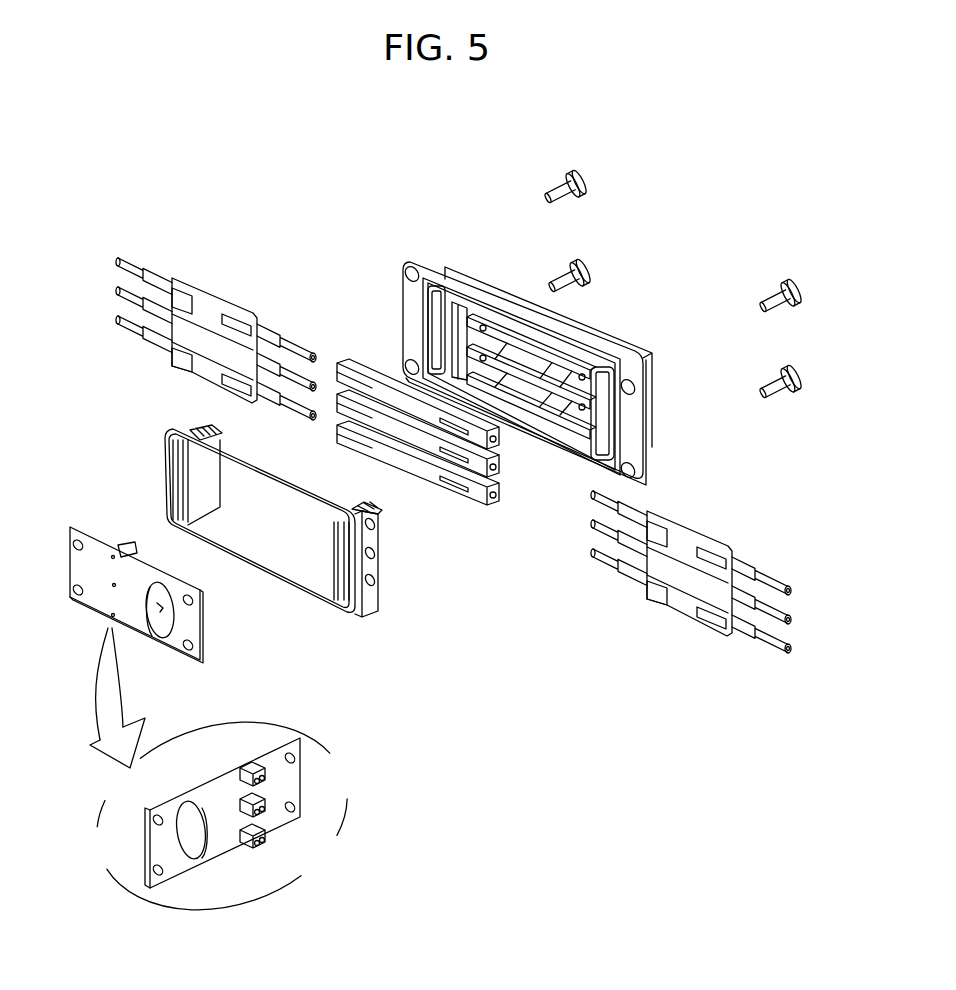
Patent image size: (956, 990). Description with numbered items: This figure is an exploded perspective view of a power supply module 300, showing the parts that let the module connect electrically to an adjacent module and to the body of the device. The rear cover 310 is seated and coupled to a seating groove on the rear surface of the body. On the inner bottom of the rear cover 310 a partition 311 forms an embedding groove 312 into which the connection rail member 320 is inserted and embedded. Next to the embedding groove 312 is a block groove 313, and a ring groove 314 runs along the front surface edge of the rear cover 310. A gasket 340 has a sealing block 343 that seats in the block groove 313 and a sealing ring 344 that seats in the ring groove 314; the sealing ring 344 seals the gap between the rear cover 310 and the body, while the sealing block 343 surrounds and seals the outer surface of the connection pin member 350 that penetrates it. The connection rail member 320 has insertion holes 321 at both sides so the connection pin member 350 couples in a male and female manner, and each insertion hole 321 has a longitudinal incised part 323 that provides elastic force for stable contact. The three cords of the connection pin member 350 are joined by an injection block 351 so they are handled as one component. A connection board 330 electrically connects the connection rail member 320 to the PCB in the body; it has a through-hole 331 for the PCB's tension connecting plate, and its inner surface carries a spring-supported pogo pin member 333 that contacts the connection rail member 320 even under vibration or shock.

The power supply module 300 is at (99, 208).
The rear cover 310 is at (652, 316).
The partition 311 is at (545, 387).
The embedding groove 312 is at (513, 357).
The block groove 313 is at (600, 407).
The ring groove 314 is at (468, 392).
The connection rail member 320 is at (360, 367).
The insertion hole 321 is at (487, 476).
The incised part 323 is at (447, 486).
The connection board 330 is at (95, 603).
The through-hole 331 is at (152, 622).
The pogo pin member 333 is at (267, 772).
The gasket 340 is at (386, 623).
The sealing block 343 is at (375, 567).
The sealing ring 344 is at (258, 572).
The connection pin member 350 is at (768, 570).
The injection block 351 is at (697, 557).